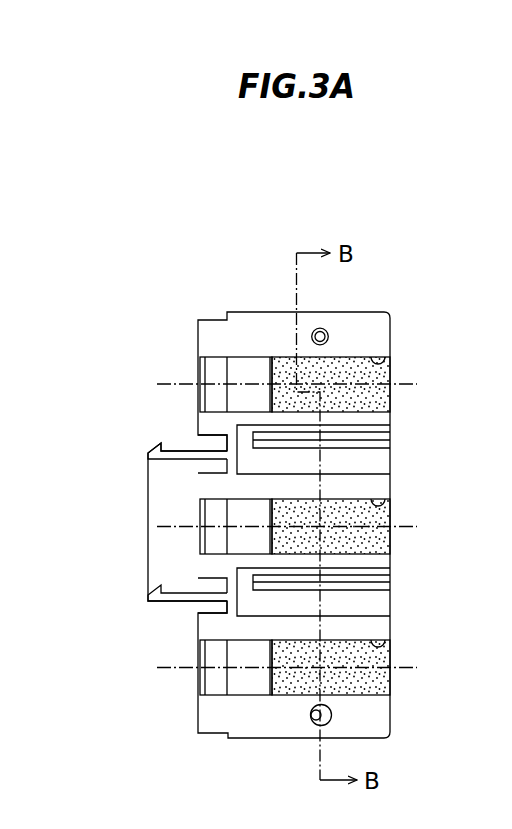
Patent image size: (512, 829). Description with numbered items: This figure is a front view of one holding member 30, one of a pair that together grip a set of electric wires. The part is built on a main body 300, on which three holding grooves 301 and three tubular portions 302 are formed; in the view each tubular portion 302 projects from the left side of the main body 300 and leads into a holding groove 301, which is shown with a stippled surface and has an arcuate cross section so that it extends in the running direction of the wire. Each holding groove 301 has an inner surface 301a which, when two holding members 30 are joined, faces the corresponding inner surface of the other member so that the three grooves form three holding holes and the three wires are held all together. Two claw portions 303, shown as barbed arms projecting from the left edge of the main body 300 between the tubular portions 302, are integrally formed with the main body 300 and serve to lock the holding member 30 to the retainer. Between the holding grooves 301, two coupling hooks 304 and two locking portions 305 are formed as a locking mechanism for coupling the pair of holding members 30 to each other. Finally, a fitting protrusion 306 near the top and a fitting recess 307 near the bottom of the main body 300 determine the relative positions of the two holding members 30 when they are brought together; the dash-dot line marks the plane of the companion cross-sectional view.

The holding member 30 is at (177, 213).
The main body 300 is at (381, 332).
The holding groove 301 is at (372, 395).
The inner surface 301a is at (383, 362).
The tubular portion 302 is at (237, 375).
The claw portion 303 is at (149, 447).
The coupling hook 304 is at (380, 440).
The locking portion 305 is at (381, 482).
The fitting protrusion 306 is at (328, 331).
The fitting recess 307 is at (316, 724).